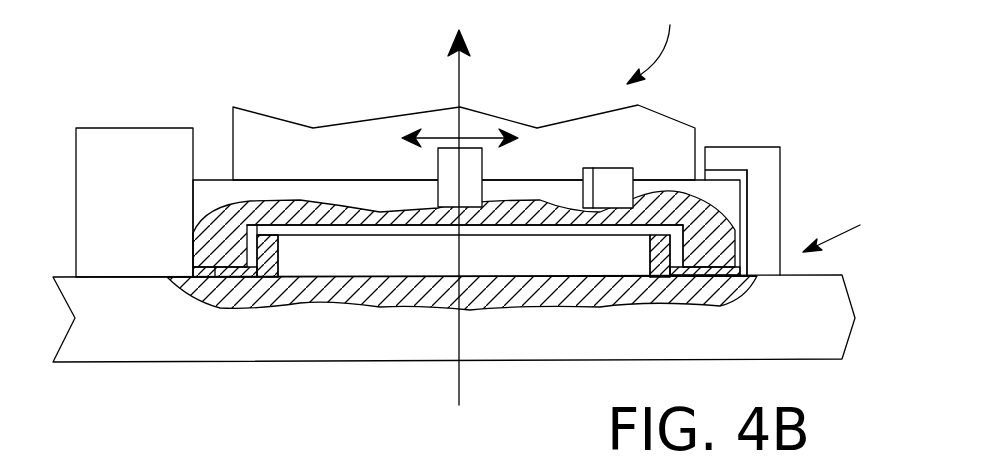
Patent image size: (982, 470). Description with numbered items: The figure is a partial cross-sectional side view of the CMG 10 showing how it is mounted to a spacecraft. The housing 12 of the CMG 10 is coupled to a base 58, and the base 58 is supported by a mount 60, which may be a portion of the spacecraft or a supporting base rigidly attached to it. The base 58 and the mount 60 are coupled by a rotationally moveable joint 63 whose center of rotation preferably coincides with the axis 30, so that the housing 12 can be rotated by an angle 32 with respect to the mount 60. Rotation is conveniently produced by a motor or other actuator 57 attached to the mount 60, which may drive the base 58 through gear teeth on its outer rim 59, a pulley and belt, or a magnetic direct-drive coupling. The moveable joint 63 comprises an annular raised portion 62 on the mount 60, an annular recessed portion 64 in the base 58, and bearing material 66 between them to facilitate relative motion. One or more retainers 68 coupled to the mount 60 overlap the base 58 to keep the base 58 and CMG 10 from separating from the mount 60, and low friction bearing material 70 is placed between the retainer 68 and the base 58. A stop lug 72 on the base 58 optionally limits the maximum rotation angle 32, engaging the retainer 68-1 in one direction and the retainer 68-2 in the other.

The CMG 10 is at (658, 42).
The housing 12 is at (297, 166).
The axis 30 is at (430, 340).
The angle 32 is at (481, 138).
The actuator 57 is at (148, 222).
The base 58 is at (215, 180).
The outer rim 59 is at (327, 197).
The mount 60 is at (127, 347).
The annular raised portion 62 is at (280, 252).
The moveable joint 63 is at (849, 231).
The annular recessed portion 64 is at (523, 220).
The bearing material 66 is at (693, 267).
The retainers 68 is at (605, 169).
The retainer 68-1 is at (438, 164).
The retainer 68-2 is at (770, 178).
The low friction bearing material 70 is at (714, 177).
The stop lug 72 is at (612, 168).